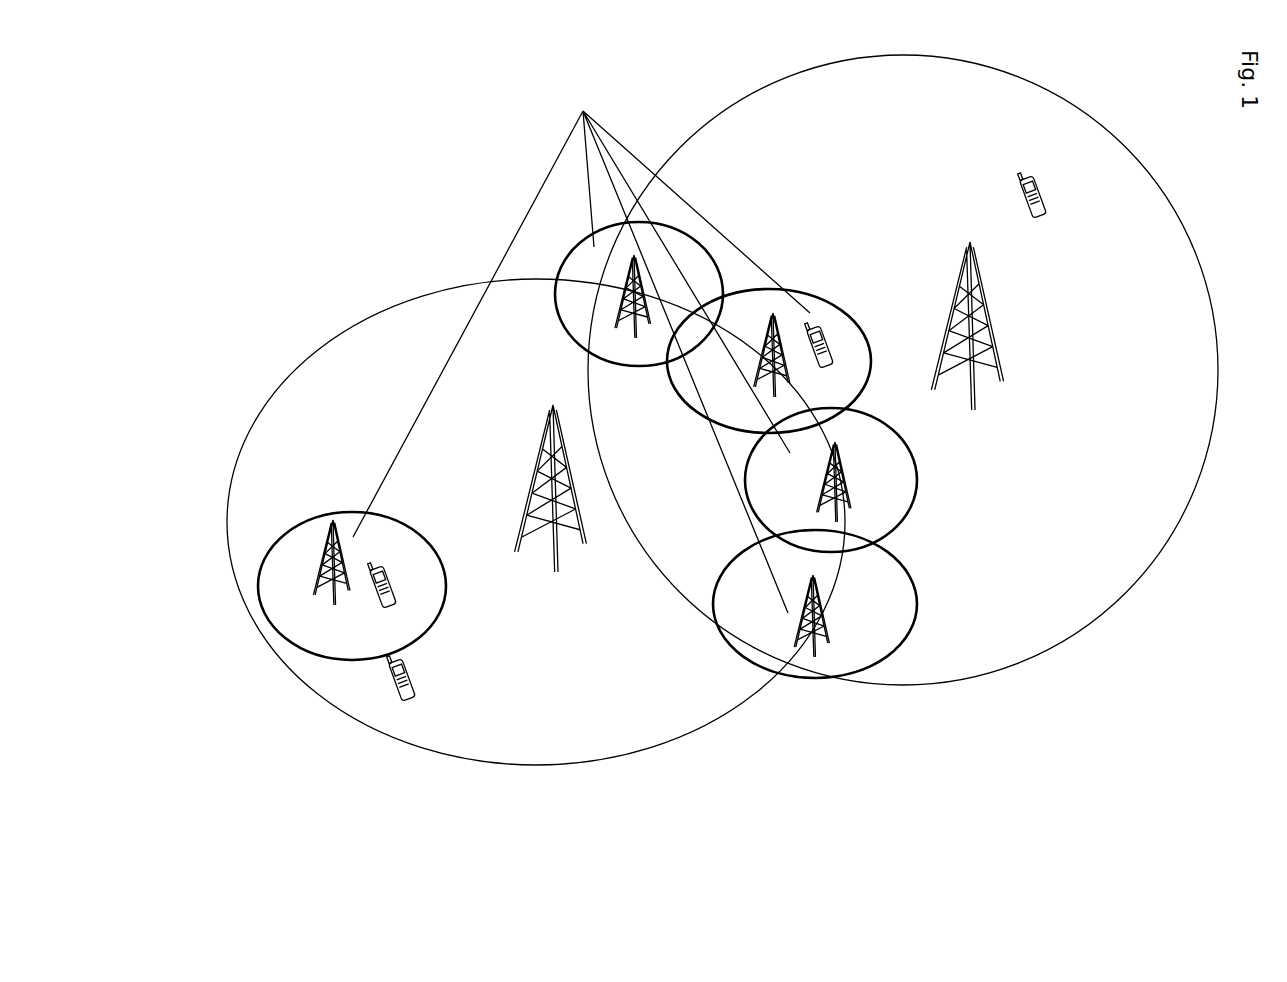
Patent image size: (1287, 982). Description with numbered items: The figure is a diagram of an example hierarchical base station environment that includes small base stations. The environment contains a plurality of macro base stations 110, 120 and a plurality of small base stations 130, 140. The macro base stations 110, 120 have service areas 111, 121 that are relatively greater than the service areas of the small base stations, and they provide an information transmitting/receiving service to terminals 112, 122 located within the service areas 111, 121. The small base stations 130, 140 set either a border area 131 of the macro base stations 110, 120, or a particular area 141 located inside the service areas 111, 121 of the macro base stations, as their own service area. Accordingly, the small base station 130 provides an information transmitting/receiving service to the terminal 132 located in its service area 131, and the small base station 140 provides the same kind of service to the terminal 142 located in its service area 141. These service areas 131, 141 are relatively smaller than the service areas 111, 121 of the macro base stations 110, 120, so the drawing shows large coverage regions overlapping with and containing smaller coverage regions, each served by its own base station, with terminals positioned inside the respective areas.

The macro base station 110 is at (540, 454).
The service area 111 is at (440, 290).
The terminal 112 is at (410, 678).
The macro base station 120 is at (988, 298).
The service area 121 is at (1075, 102).
The terminal 122 is at (1047, 200).
The small base station 130 is at (776, 328).
The border area 131 is at (833, 299).
The terminal 132 is at (829, 345).
The small base station 140 is at (320, 576).
The particular area 141 is at (419, 531).
The terminal 142 is at (396, 589).